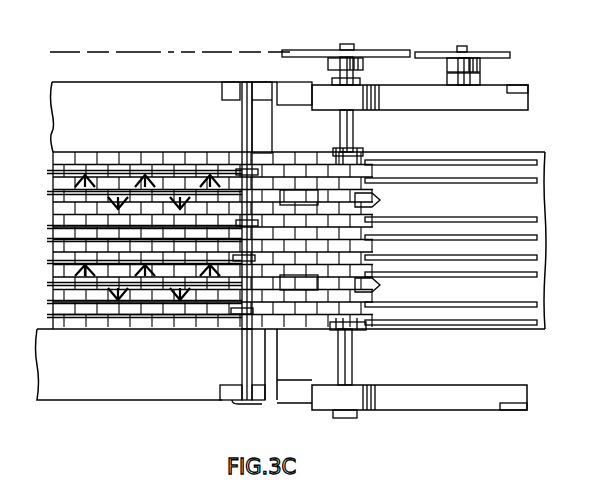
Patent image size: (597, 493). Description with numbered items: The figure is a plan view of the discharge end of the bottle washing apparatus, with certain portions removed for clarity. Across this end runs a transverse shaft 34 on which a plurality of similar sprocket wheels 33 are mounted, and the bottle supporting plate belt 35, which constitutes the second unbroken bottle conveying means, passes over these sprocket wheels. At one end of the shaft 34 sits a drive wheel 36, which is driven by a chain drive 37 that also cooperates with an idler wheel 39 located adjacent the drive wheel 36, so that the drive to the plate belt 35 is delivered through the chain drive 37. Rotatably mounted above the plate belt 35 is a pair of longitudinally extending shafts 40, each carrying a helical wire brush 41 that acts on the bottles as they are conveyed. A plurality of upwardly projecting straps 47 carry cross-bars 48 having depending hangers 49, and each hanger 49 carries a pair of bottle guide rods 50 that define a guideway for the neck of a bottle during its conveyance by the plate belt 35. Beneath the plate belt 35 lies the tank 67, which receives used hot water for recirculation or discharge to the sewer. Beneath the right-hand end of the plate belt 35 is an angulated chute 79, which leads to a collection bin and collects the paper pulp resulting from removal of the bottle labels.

The sprocket wheels 33 is at (365, 152).
The transverse shaft 34 is at (353, 123).
The bottle supporting plate belt 35 is at (378, 200).
The drive wheel 36 is at (389, 50).
The chain drive 37 is at (210, 52).
The idler wheel 39 is at (431, 52).
The longitudinally extending shafts 40 is at (54, 192).
The helical wire brush 41 is at (163, 160).
The upwardly projecting straps 47 is at (236, 402).
The cross-bars 48 is at (240, 360).
The depending hangers 49 is at (238, 160).
The bottle guide rods 50 is at (440, 186).
The tank 67 is at (135, 377).
The angulated chute 79 is at (518, 330).